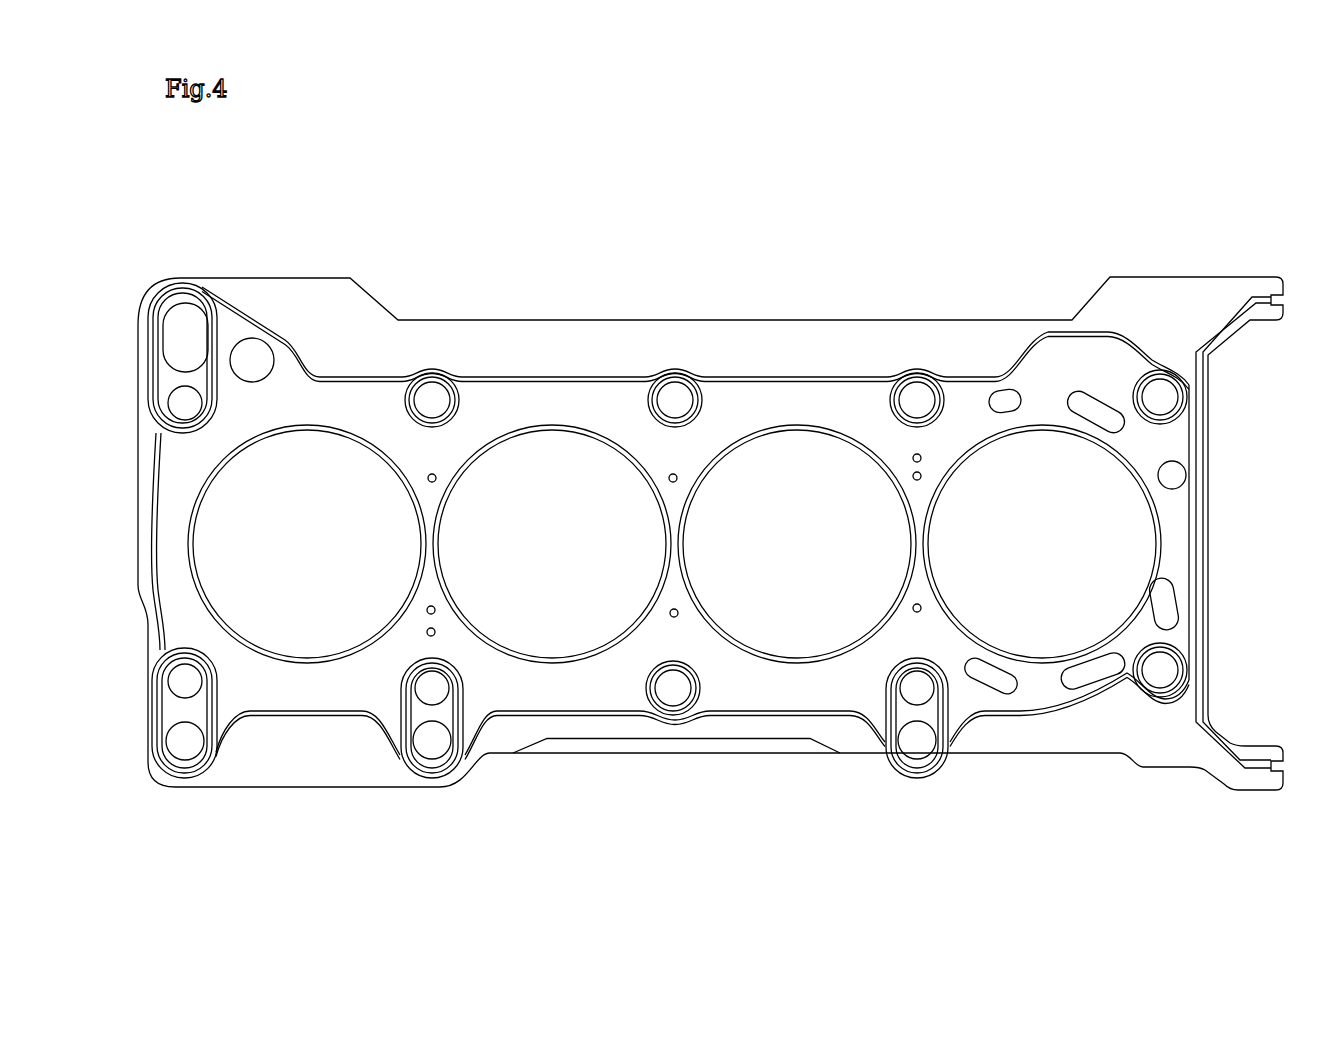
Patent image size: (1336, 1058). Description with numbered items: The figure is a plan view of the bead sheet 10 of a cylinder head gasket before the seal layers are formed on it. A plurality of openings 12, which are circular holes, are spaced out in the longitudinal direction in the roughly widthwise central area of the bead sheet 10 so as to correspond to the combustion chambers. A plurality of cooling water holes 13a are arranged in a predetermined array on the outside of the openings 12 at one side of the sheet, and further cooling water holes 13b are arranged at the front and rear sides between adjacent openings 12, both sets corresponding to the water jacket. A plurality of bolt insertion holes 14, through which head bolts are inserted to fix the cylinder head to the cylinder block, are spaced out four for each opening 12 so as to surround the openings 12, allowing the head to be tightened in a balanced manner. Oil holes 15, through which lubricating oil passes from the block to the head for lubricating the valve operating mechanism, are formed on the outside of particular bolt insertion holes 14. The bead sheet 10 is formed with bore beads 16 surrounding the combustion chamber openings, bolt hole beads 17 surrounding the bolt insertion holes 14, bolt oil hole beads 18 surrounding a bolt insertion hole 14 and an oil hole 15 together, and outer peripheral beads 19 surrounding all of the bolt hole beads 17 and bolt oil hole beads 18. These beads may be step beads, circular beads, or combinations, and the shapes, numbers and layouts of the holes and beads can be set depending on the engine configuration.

The bead sheet 10 is at (1073, 212).
The openings 12 is at (322, 566).
The cooling water holes 13a is at (1068, 400).
The cooling water holes 13b is at (436, 478).
The bolt insertion holes 14 is at (437, 393).
The oil holes 15 is at (192, 307).
The bore beads 16 is at (293, 663).
The bolt hole beads 17 is at (393, 402).
The bolt oil hole beads 18 is at (160, 437).
The outer peripheral beads 19 is at (812, 375).